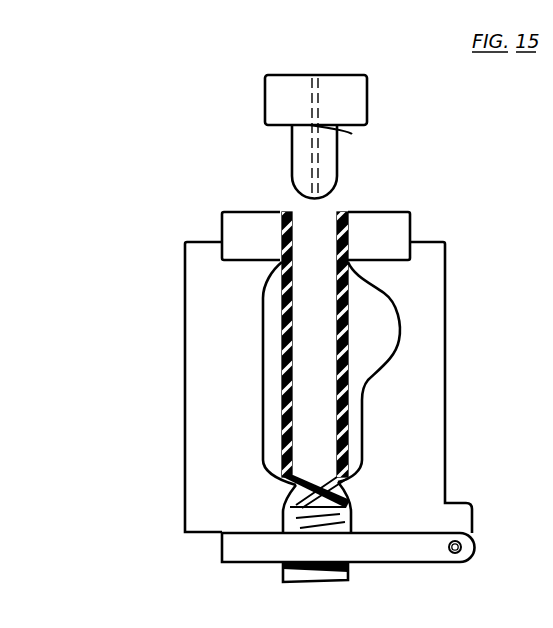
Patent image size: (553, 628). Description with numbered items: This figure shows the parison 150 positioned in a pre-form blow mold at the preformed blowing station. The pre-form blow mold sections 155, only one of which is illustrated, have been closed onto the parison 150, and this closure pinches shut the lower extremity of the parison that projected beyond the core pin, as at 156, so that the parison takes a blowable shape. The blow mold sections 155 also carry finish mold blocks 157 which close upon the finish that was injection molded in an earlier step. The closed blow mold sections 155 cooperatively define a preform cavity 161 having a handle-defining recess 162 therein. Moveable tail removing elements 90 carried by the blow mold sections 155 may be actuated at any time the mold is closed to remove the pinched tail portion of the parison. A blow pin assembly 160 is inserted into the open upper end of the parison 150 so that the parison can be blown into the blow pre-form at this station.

The blow pin assembly 160 is at (372, 106).
The finish mold block 157 is at (374, 226).
The pre-form blow mold section 155 is at (213, 435).
The parison 150 is at (352, 311).
The handle-defining recess 162 is at (398, 328).
The preform cavity 161 is at (366, 408).
The pinched lower extremity of the parison 156 is at (330, 483).
The tail removing element 90 is at (243, 555).